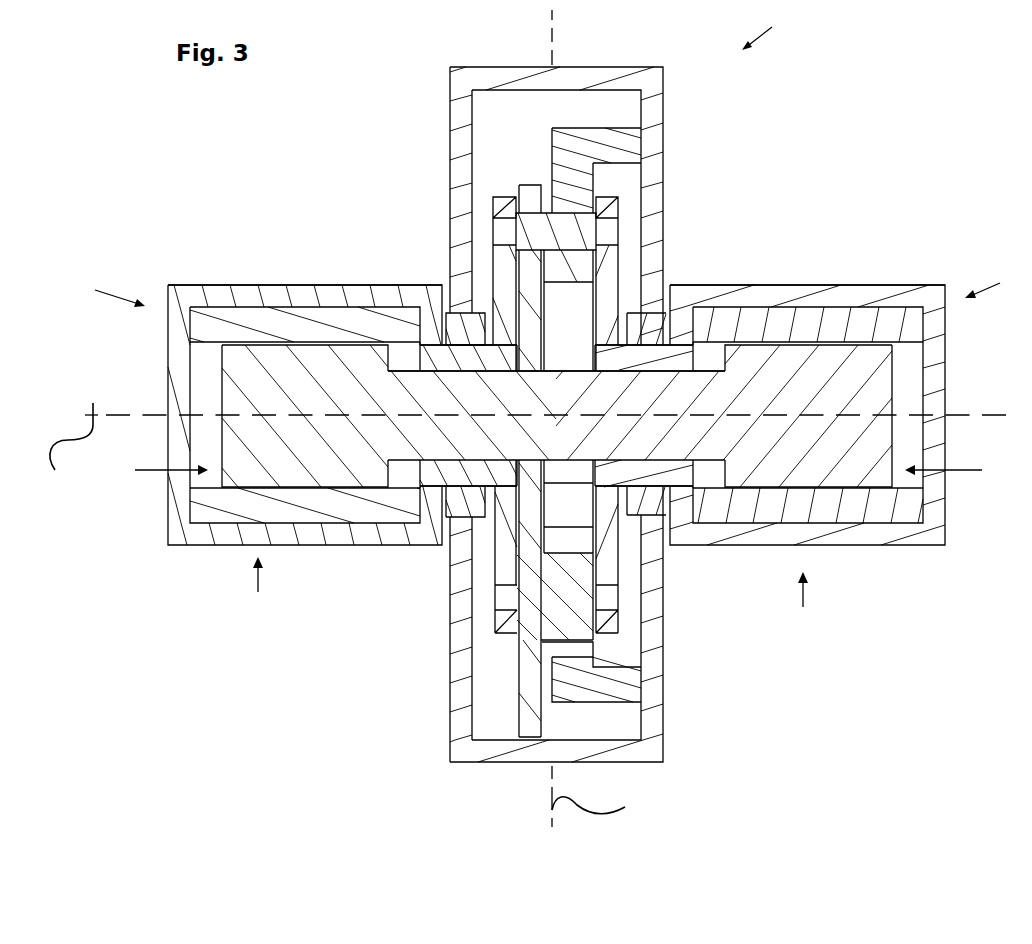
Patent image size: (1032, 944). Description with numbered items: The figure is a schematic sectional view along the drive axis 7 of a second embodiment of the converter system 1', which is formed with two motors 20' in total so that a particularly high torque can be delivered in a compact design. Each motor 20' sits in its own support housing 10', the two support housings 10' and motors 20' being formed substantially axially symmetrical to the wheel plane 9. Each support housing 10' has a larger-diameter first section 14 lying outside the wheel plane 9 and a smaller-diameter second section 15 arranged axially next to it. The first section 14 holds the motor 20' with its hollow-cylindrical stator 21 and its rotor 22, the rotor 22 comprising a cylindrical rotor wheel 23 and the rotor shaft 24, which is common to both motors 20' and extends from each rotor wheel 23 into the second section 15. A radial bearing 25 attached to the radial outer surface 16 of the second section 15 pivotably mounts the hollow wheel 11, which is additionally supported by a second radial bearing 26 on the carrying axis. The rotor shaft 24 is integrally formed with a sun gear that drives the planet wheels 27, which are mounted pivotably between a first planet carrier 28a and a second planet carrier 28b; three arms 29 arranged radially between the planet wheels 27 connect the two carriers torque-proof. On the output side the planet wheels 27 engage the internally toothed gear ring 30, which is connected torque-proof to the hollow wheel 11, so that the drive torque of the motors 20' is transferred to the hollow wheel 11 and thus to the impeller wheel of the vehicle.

The converter system 1' is at (772, 26).
The drive axis 7 is at (71, 444).
The wheel plane 9 is at (596, 798).
The support housing 10' is at (556, 223).
The hollow wheel 11 is at (655, 97).
The first section 14 is at (531, 600).
The second section 15 is at (470, 503).
The radial outer surface 16 is at (655, 470).
The motor 20' is at (533, 402).
The stator 21 is at (913, 598).
The rotor 22 is at (554, 470).
The rotor wheel 23 is at (877, 356).
The rotor shaft 24 is at (540, 438).
The radial bearing 25 is at (488, 477).
The second radial bearing 26 is at (643, 502).
The planet wheels 27 is at (527, 713).
The first planet carrier 28a is at (502, 207).
The second planet carrier 28b is at (610, 267).
The arms 29 is at (587, 223).
The gear ring 30 is at (630, 694).